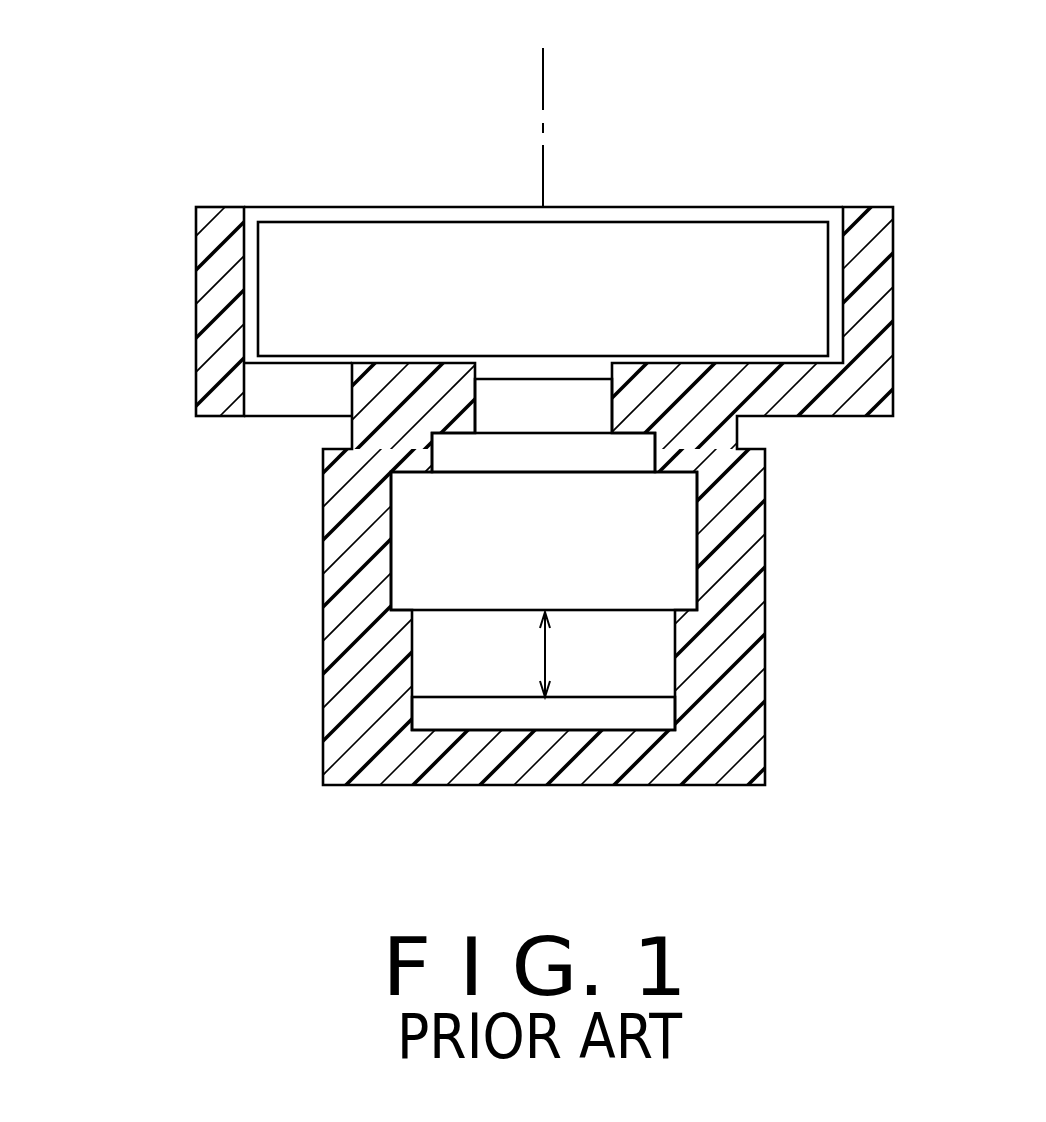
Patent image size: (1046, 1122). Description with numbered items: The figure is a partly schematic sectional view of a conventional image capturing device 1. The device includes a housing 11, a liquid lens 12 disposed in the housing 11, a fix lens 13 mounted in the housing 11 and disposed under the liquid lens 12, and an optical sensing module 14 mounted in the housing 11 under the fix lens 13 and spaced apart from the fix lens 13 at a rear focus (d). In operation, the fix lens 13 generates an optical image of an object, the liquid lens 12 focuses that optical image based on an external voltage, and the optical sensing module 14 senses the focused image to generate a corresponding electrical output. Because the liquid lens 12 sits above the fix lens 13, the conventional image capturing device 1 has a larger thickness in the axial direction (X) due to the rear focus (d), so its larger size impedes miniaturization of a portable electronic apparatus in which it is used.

The conventional image capturing device 1 is at (152, 163).
The housing 11 is at (212, 278).
The liquid lens 12 is at (637, 262).
The fix lens 13 is at (670, 552).
The optical sensing module 14 is at (665, 712).